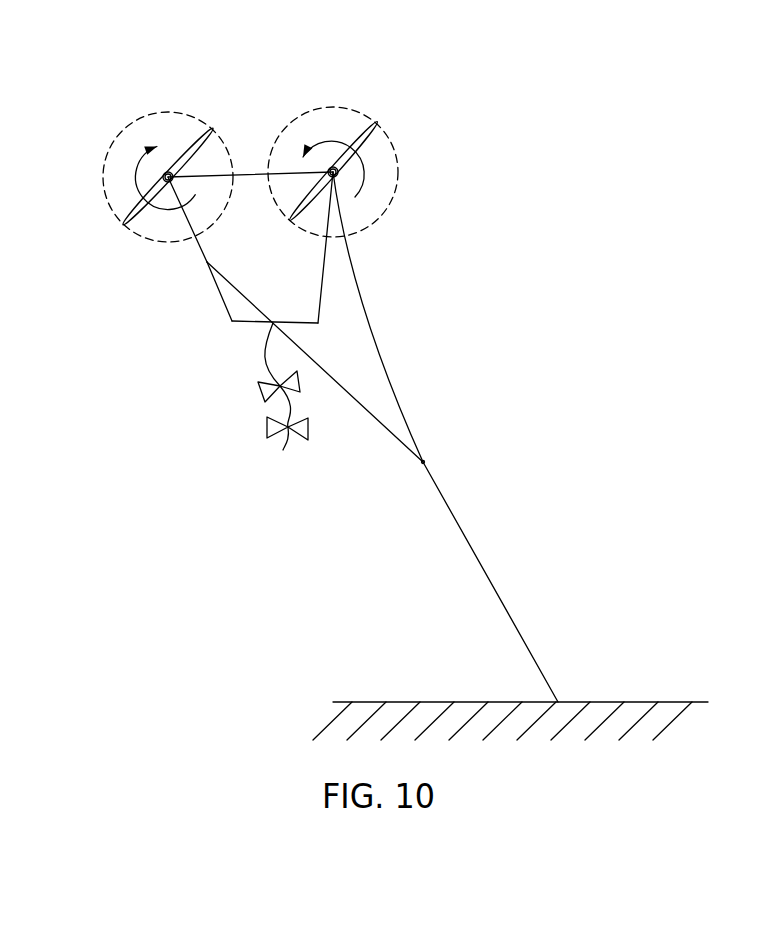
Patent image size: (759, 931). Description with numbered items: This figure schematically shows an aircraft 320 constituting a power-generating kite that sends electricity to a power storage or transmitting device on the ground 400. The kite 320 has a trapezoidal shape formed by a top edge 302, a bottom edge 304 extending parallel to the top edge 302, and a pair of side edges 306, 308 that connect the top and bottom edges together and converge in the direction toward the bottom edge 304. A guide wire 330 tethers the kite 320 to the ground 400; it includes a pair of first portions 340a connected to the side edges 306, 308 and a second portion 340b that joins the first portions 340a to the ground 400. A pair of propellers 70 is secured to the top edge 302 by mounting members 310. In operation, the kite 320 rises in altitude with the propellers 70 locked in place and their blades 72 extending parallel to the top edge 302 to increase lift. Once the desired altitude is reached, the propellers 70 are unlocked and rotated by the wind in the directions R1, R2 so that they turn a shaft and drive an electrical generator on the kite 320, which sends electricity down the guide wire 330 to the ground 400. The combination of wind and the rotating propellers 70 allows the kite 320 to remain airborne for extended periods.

The propeller 70 is at (167, 147).
The blades 72 is at (187, 153).
The top edge 302 is at (250, 175).
The bottom edge 304 is at (250, 325).
The side edge 306 is at (215, 283).
The side edge 308 is at (323, 298).
The mounting members 310 is at (168, 198).
The aircraft 320 is at (214, 312).
The guide wire 330 is at (452, 453).
The first portions 340a is at (398, 397).
The second portion 340b is at (492, 584).
The ground 400 is at (607, 708).
The direction of rotation R1 is at (133, 177).
The direction of rotation R2 is at (332, 138).